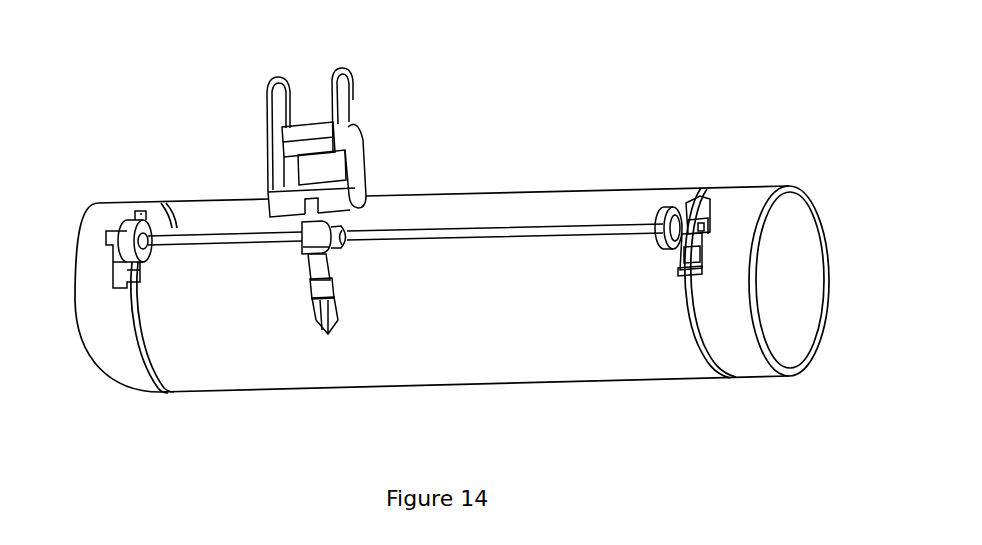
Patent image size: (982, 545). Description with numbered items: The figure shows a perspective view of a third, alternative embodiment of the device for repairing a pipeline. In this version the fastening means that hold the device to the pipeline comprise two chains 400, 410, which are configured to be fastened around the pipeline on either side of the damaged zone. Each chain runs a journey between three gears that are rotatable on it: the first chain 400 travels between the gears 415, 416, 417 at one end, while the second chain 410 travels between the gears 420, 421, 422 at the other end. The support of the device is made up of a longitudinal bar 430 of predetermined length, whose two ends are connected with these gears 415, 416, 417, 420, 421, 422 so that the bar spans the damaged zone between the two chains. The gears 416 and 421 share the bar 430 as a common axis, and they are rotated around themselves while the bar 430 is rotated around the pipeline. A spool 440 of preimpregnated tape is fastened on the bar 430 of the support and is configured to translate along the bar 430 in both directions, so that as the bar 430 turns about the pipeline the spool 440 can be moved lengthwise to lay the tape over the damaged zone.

The chain 400 is at (154, 386).
The chain 410 is at (698, 343).
The gear 415 is at (141, 211).
The gear 416 is at (150, 232).
The gear 417 is at (123, 283).
The gear 420 is at (698, 196).
The gear 421 is at (663, 203).
The gear 422 is at (682, 267).
The bar 430 is at (443, 233).
The spool 440 is at (347, 105).